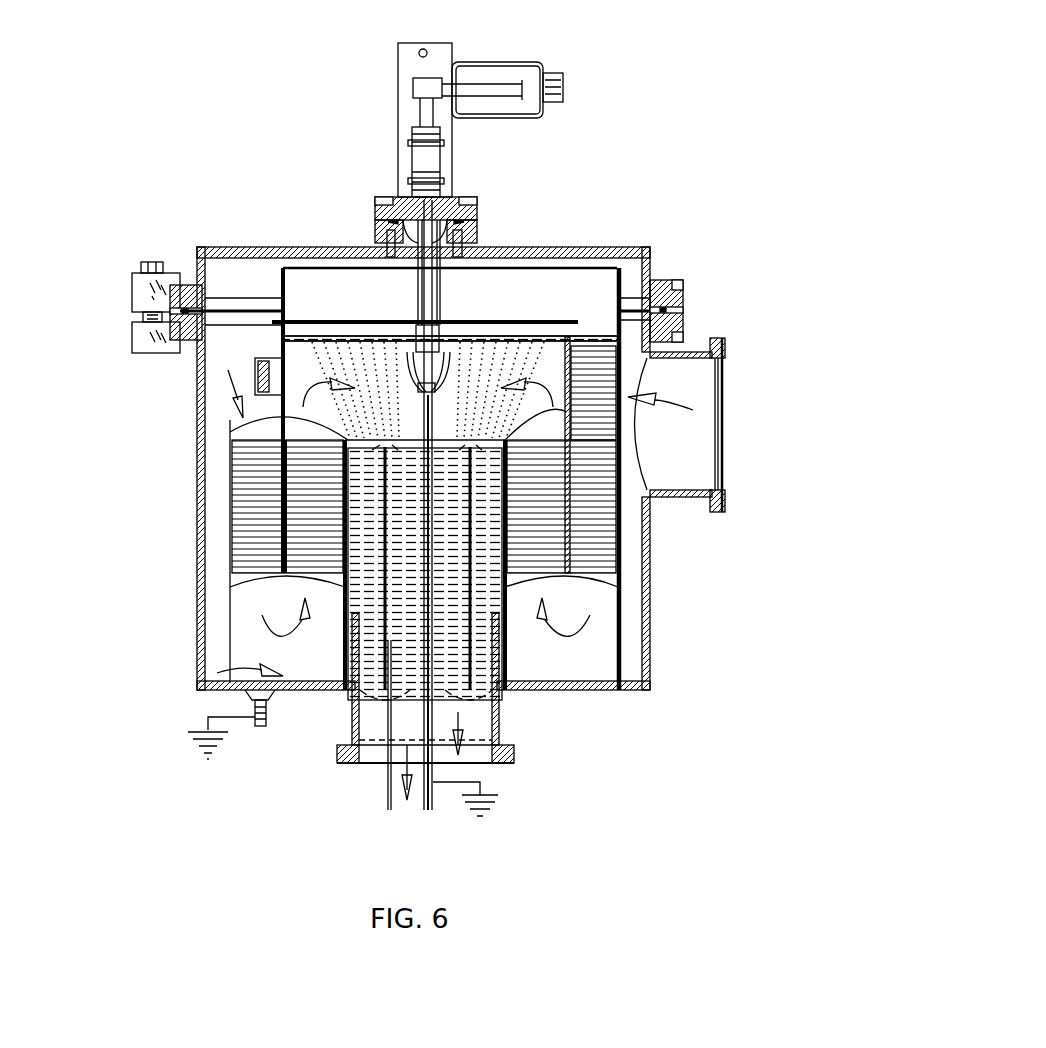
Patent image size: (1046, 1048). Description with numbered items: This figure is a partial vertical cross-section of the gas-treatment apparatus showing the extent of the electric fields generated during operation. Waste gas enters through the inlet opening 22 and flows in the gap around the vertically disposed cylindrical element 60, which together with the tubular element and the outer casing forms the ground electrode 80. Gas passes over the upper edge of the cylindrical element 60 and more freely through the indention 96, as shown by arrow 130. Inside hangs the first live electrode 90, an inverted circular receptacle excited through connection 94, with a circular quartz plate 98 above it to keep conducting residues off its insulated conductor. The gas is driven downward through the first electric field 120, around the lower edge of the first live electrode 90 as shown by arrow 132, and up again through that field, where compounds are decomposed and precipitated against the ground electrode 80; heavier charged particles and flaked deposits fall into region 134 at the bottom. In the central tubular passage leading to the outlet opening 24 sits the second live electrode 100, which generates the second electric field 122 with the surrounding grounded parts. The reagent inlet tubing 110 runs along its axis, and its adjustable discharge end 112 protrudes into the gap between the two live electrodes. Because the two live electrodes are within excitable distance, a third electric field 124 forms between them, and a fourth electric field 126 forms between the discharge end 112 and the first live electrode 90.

The inlet opening 22 is at (760, 413).
The outlet opening 24 is at (362, 768).
The cylindrical element 60 is at (312, 268).
The ground electrode 80 is at (230, 608).
The first live electrode 90 is at (265, 358).
The connection 94 is at (555, 75).
The indention 96 is at (277, 283).
The quartz plate 98 is at (524, 322).
The second live electrode 100 is at (473, 687).
The reagent inlet tubing 110 is at (350, 737).
The discharge end 112 is at (432, 410).
The first electric field 120 is at (250, 503).
The second electric field 122 is at (500, 618).
The third electric field 124 is at (500, 345).
The fourth electric field 126 is at (447, 362).
The arrow 130 is at (228, 372).
The arrow 132 is at (262, 633).
The region 134 is at (225, 662).